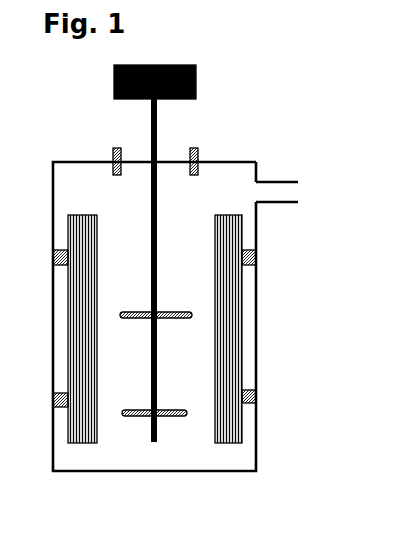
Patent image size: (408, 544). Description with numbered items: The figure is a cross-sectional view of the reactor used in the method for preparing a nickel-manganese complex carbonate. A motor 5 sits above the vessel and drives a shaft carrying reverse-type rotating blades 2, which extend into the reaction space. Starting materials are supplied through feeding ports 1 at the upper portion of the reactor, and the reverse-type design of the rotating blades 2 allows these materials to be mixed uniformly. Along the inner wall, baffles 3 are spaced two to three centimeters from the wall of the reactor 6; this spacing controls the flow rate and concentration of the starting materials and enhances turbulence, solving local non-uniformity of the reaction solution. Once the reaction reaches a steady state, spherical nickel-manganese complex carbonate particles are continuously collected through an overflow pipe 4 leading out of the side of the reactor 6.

The feeding ports 1 is at (127, 144).
The reverse-type rotating blades 2 is at (173, 405).
The electrodes 3 is at (93, 418).
The overflow pipe 4 is at (290, 205).
The motor 5 is at (196, 85).
The reaction vessel 6 is at (172, 316).